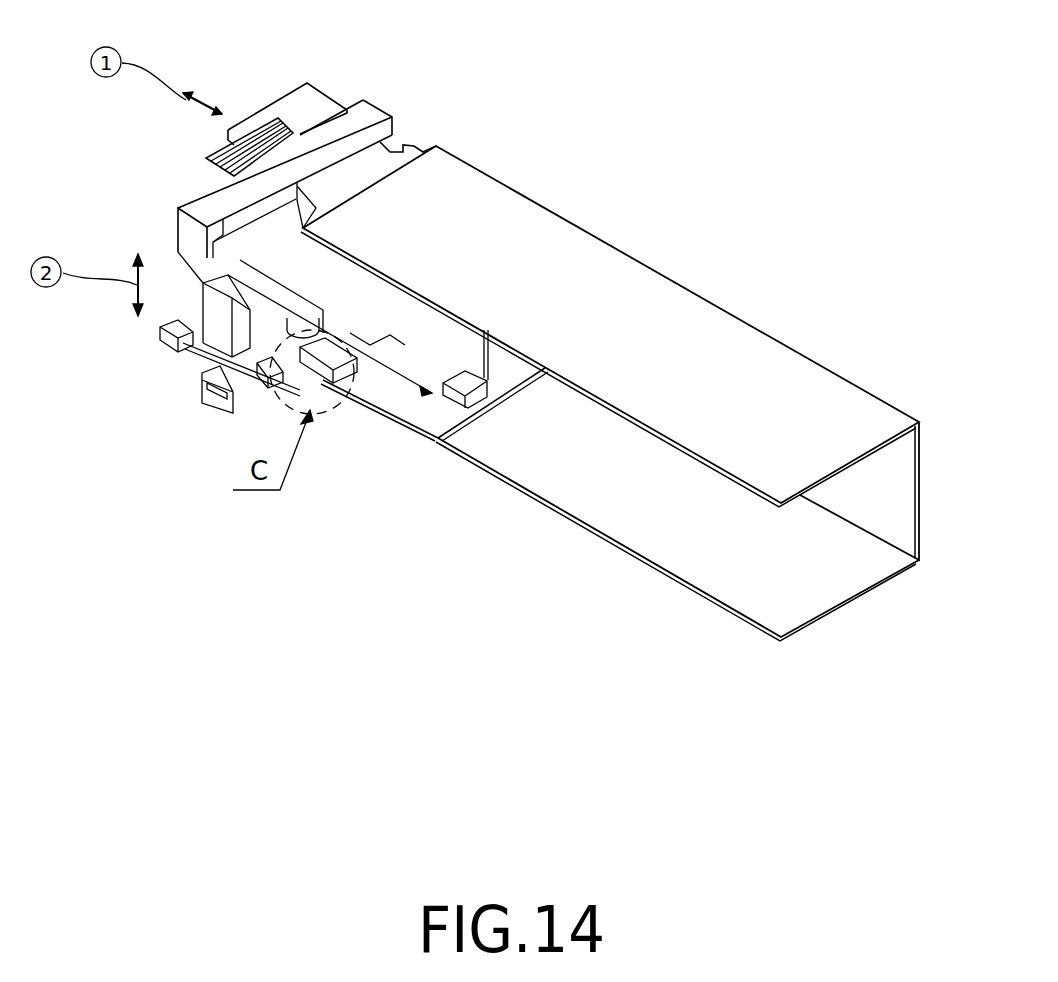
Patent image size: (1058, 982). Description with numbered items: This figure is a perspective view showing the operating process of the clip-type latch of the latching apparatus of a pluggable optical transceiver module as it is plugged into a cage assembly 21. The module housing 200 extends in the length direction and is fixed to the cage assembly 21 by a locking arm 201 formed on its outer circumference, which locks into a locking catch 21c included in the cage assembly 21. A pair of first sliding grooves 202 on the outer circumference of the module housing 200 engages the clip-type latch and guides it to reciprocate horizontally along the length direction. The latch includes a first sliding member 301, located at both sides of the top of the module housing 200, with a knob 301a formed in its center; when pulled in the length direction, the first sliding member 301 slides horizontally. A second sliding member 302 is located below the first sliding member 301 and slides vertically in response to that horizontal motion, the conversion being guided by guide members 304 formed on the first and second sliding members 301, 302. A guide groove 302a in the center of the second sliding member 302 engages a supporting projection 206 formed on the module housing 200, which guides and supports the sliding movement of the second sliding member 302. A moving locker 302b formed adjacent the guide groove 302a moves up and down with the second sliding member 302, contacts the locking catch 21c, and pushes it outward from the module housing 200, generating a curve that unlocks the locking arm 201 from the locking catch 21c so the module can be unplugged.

The cage assembly 21 is at (689, 274).
The locking catch 21c is at (365, 383).
The module housing 200 is at (330, 97).
The locking arm 201 is at (405, 365).
The first sliding groove 202 is at (401, 143).
The supporting projection 206 is at (323, 312).
The first sliding member 301 is at (195, 210).
The knob 301a is at (212, 152).
The second sliding member 302 is at (222, 402).
The guide groove 302a is at (288, 332).
The moving locker 302b is at (330, 383).
The guide member 304 is at (210, 278).